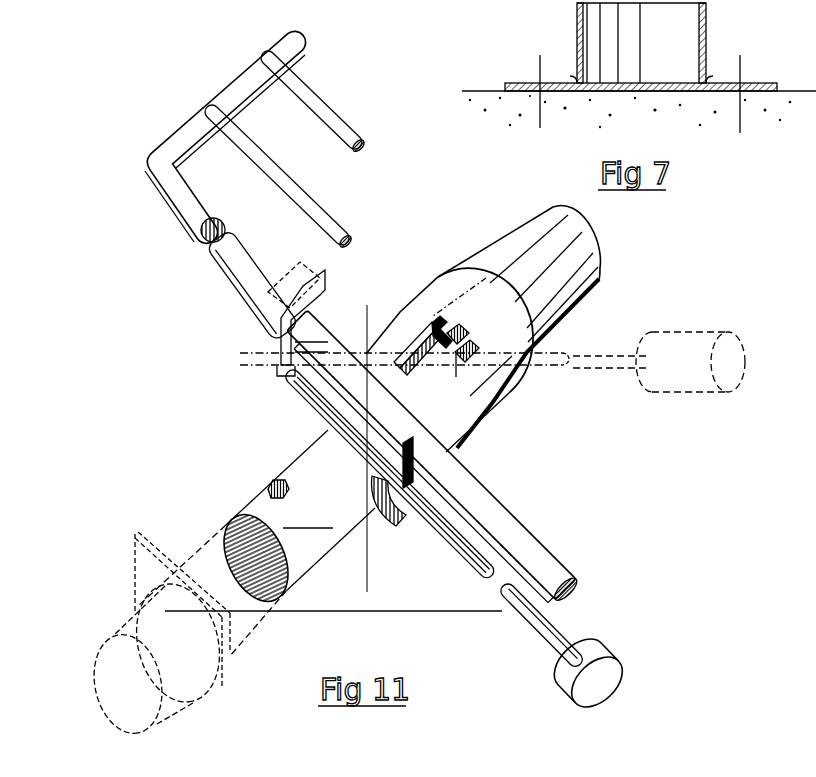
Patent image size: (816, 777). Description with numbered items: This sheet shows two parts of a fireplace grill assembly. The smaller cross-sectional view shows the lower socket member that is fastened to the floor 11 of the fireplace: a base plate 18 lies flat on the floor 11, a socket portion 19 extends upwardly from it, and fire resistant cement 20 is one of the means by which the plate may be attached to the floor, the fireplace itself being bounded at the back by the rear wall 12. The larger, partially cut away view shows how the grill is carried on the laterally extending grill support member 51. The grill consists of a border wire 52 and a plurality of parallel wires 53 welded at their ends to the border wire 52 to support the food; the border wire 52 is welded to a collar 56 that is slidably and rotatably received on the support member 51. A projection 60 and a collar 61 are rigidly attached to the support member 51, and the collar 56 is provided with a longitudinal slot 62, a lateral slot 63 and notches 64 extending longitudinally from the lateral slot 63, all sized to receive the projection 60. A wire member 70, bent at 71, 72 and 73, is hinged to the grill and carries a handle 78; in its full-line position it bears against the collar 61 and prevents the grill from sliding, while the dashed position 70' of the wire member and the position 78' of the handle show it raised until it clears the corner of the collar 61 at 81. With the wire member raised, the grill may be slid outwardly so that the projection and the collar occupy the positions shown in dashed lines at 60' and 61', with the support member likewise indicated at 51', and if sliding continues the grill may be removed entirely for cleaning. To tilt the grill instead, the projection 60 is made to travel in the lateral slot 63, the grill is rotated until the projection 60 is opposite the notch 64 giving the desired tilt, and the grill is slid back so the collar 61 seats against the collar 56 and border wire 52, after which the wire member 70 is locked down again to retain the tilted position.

In FIG. 7, the floor 11 is at (491, 90).
In FIG. 7, the base plate 18 is at (762, 86).
In FIG. 7, the socket portion 19 is at (706, 36).
In FIG. 7, the fire resistant cement 20 is at (694, 93).
In FIG. 11, the rear wall 12 is at (361, 312).
In FIG. 11, the grill support member 51 is at (256, 543).
In FIG. 11, the horizontal tube (alternate position) 51' is at (157, 657).
In FIG. 11, the border wire 52 is at (165, 141).
In FIG. 11, the parallel wires 53 is at (306, 140).
In FIG. 11, the collar 56 is at (478, 430).
In FIG. 11, the projection 60 is at (444, 318).
In FIG. 11, the projection position 60' is at (263, 476).
In FIG. 11, the collar 61 is at (410, 369).
In FIG. 11, the collar position 61' is at (170, 596).
In FIG. 11, the longitudinal slot 62 is at (403, 362).
In FIG. 11, the lateral slot 63 is at (458, 372).
In FIG. 11, the notches 64 is at (459, 331).
In FIG. 11, the wire member 70 is at (434, 518).
In FIG. 11, the wire member raised position 70' is at (445, 349).
In FIG. 11, the bend 71 is at (277, 372).
In FIG. 11, the bend 72 is at (280, 340).
In FIG. 11, the bend 73 is at (312, 283).
In FIG. 11, the handle 78 is at (598, 670).
In FIG. 11, the handle raised position 78' is at (690, 348).
In FIG. 11, the corner of collar 81 is at (326, 346).